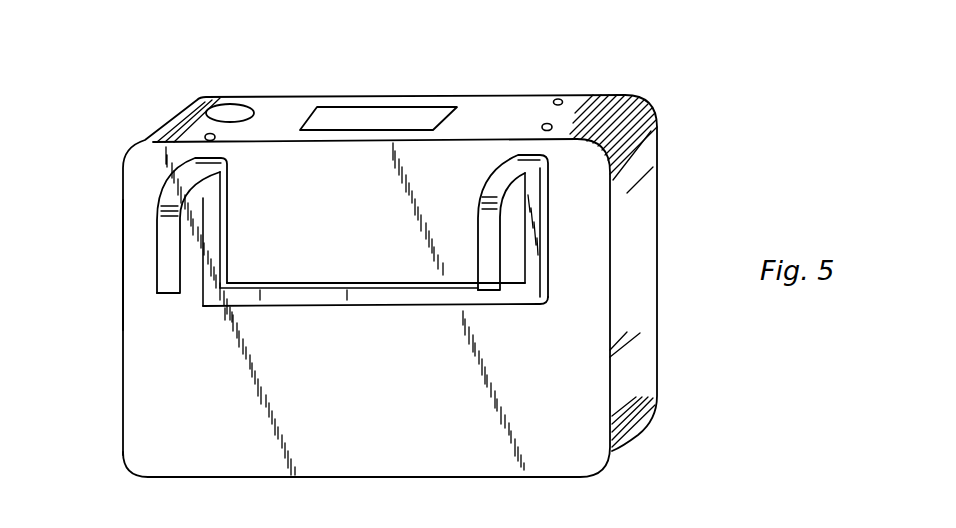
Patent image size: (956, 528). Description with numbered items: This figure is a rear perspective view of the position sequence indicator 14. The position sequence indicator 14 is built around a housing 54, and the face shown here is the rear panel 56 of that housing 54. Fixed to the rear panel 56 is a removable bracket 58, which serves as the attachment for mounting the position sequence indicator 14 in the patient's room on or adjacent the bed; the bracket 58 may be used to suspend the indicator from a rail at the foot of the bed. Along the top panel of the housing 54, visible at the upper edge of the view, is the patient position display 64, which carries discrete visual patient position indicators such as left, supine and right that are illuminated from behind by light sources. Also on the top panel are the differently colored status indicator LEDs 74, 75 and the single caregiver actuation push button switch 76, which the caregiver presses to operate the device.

The position sequence indicator 14 is at (638, 378).
The housing 54 is at (120, 238).
The rear panel 56 is at (136, 413).
The removable bracket 58 is at (162, 207).
The patient position display 64 is at (410, 97).
The status indicator LED 74 is at (563, 100).
The status indicator LED 75 is at (205, 136).
The caregiver actuation push button switch 76 is at (223, 106).